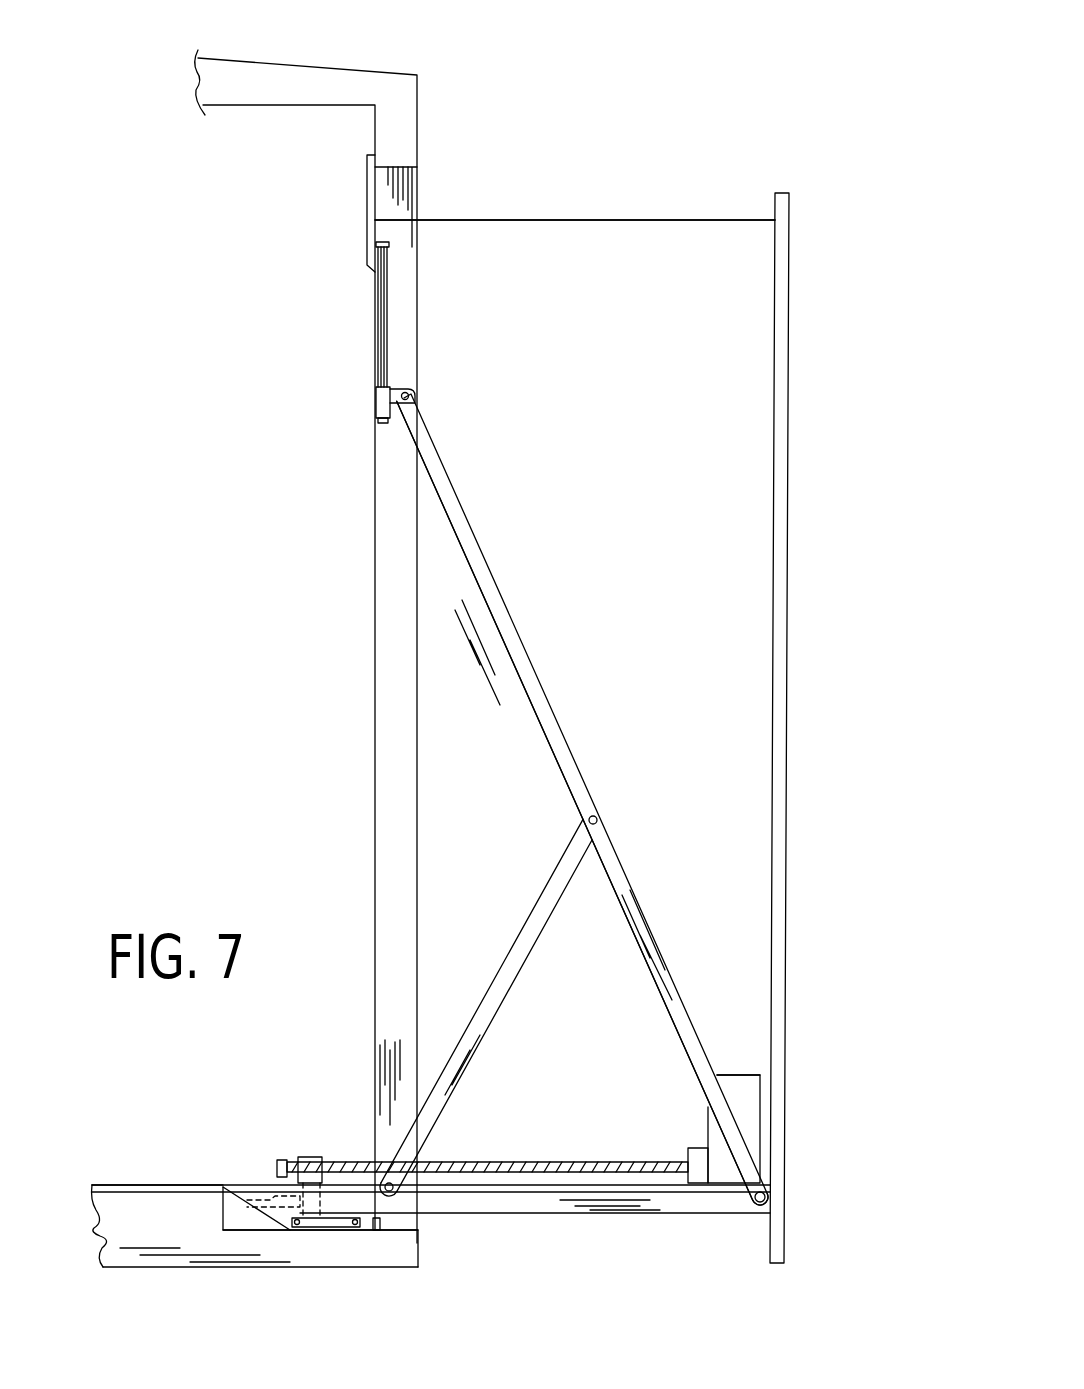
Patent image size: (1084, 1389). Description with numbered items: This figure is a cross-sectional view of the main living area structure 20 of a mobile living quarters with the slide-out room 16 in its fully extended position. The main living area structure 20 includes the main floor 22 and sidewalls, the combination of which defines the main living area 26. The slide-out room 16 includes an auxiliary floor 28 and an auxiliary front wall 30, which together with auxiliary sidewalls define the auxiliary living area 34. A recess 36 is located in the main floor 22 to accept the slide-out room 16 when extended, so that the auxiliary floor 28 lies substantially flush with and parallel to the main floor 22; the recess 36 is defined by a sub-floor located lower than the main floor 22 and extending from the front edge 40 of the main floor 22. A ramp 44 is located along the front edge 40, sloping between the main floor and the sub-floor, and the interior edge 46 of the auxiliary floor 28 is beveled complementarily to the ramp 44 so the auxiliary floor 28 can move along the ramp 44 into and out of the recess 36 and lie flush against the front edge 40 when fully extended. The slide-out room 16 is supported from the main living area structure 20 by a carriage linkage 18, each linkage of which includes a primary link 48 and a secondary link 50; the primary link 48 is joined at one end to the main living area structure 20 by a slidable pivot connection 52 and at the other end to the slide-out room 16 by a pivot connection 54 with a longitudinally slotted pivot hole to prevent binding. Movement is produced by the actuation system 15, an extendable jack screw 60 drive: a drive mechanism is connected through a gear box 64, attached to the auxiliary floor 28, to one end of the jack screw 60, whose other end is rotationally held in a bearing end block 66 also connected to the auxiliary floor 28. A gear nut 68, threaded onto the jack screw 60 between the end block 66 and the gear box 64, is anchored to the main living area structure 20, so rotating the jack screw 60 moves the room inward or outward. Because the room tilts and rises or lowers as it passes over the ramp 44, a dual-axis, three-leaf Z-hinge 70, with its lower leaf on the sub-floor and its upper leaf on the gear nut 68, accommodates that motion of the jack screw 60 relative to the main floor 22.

The actuation system 15 is at (733, 1060).
The slide-out room 16 is at (591, 219).
The carriage linkage 18 is at (489, 557).
The main living area structure 20 is at (291, 63).
The main floor 22 is at (113, 1182).
The main living area 26 is at (283, 176).
The auxiliary floor 28 is at (253, 1185).
The auxiliary front wall 30 is at (783, 432).
The auxiliary living area 34 is at (595, 325).
The recess 36 is at (365, 1215).
The front edge 40 is at (207, 1185).
The ramp 44 is at (245, 1220).
The interior edge 46 is at (218, 1185).
The primary link 48 is at (573, 768).
The secondary link 50 is at (563, 875).
The slidable pivot connection 52 is at (376, 404).
The pivot connection 54 is at (774, 1187).
The jack screw 60 is at (601, 1160).
The gear box 64 is at (748, 1093).
The bearing end block 66 is at (285, 1158).
The gear nut 68 is at (318, 1155).
The Z-hinge 70 is at (331, 1232).